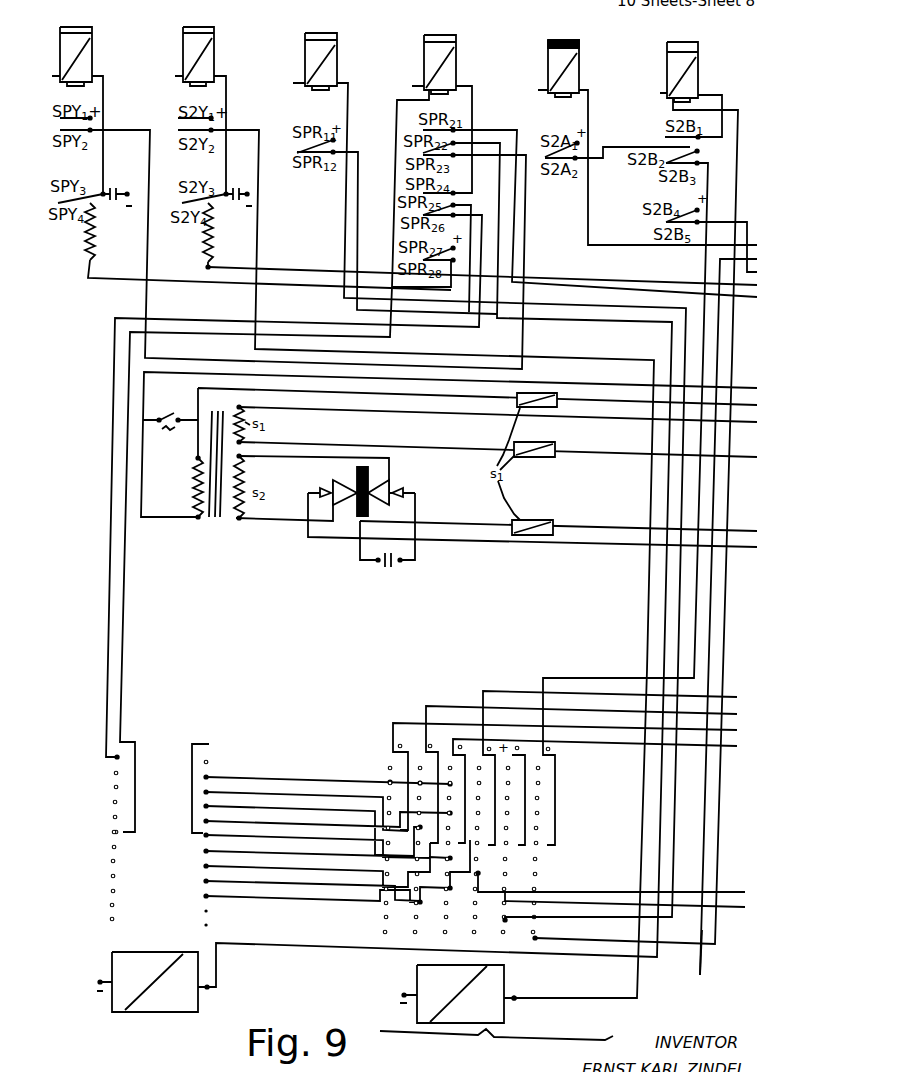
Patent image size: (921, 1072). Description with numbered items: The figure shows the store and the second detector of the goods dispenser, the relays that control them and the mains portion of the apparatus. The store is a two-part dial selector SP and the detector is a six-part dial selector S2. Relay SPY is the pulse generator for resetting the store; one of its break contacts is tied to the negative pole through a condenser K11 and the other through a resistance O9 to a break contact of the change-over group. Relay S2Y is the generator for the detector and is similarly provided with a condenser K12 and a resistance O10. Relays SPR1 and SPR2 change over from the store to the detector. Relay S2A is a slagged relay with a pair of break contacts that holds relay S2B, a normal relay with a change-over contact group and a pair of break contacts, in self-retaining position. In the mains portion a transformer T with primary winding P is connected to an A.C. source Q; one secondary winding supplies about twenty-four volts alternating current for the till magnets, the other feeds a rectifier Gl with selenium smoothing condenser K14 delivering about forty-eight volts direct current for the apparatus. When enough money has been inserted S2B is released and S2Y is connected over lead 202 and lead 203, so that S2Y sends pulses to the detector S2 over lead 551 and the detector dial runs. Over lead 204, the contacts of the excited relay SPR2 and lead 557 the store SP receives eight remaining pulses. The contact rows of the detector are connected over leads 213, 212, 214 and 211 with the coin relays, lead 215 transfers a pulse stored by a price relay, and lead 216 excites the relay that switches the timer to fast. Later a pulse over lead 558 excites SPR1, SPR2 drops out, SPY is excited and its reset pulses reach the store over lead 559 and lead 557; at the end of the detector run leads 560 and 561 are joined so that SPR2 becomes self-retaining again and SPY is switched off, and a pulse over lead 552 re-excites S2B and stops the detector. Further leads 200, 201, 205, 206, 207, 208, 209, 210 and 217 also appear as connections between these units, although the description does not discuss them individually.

The line 200 is at (686, 174).
The line 201 is at (746, 613).
The lead 202 is at (745, 252).
The lead 203 is at (500, 282).
The lead 204 is at (623, 221).
The line 205 is at (467, 444).
The line 206 is at (495, 423).
The line 207 is at (516, 419).
The line 208 is at (516, 454).
The line 209 is at (576, 531).
The line 210 is at (550, 525).
The lead 211 is at (628, 768).
The lead 212 is at (599, 774).
The lead 213 is at (583, 776).
The lead 214 is at (613, 790).
The lead 215 is at (628, 888).
The lead 216 is at (641, 905).
The line 217 is at (705, 964).
The lead 551 is at (572, 361).
The lead 552 is at (724, 636).
The lead 557 is at (498, 240).
The lead 558 is at (675, 827).
The lead 559 is at (145, 297).
The lead 560 is at (105, 695).
The lead 561 is at (124, 679).
The condenser K11 is at (119, 183).
The condenser K12 is at (234, 183).
The selenium smoothing condenser K14 is at (393, 571).
The resistance O9 is at (97, 246).
The resistance O10 is at (216, 247).
The rectifier Gl is at (370, 475).
The A.C. source Q is at (170, 414).
The primary winding P is at (192, 487).
The transformer T is at (215, 475).
The two-part dial selector SP is at (169, 832).
The six-part dial selector S2 is at (496, 1014).
The relay SPY is at (77, 98).
The relay S2Y is at (200, 101).
The relay SPR1 is at (489, 467).
The relay SPR2 is at (432, 152).
The slagged relay S2A is at (560, 58).
The relay S2B is at (691, 81).